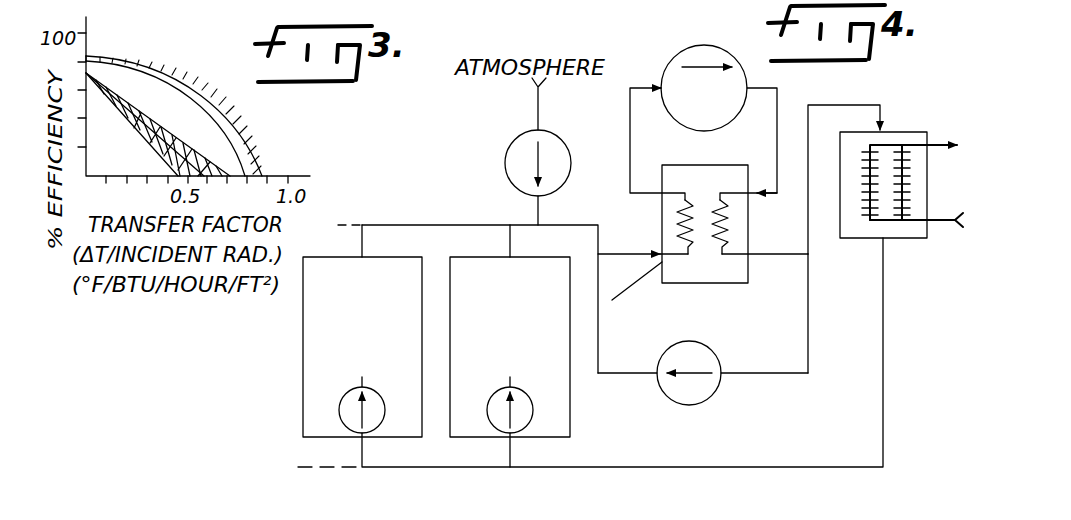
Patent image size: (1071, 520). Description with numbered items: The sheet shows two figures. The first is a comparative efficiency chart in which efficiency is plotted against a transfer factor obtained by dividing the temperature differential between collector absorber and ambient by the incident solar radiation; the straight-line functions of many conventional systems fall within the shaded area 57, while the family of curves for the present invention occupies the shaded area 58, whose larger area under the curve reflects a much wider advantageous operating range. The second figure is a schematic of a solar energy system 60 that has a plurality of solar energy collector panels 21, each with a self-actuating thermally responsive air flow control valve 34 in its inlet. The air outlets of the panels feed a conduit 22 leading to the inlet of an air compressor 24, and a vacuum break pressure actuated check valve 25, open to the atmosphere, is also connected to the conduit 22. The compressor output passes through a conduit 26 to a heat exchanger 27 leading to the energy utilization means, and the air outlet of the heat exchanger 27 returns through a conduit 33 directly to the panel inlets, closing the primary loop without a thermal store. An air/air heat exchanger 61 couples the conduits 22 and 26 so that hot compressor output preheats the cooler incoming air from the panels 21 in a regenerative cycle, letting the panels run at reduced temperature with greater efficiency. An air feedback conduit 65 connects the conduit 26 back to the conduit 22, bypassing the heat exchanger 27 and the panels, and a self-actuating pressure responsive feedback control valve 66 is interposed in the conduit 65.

In FIG. 3, the shaded area 57 is at (139, 112).
In FIG. 3, the shaded area 58 is at (244, 113).
In FIG. 4, the solar energy system 60 is at (488, 190).
In FIG. 4, the vacuum break pressure actuated check valve 25 is at (561, 139).
In FIG. 4, the conduit 22 is at (557, 224).
In FIG. 4, the solar energy collector panels 21 is at (303, 375).
In FIG. 4, the self-actuating thermally responsive air flow control valve 34 is at (347, 430).
In FIG. 4, the conduit 33 is at (883, 352).
In FIG. 4, the air compressor 24 is at (720, 26).
In FIG. 4, the air/air heat exchanger 61 is at (708, 165).
In FIG. 4, the conduit 26 is at (853, 101).
In FIG. 4, the heat exchanger 27 is at (883, 132).
In FIG. 4, the air feedback conduit 65 is at (772, 374).
In FIG. 4, the self-actuating pressure responsive feedback control valve 66 is at (685, 404).